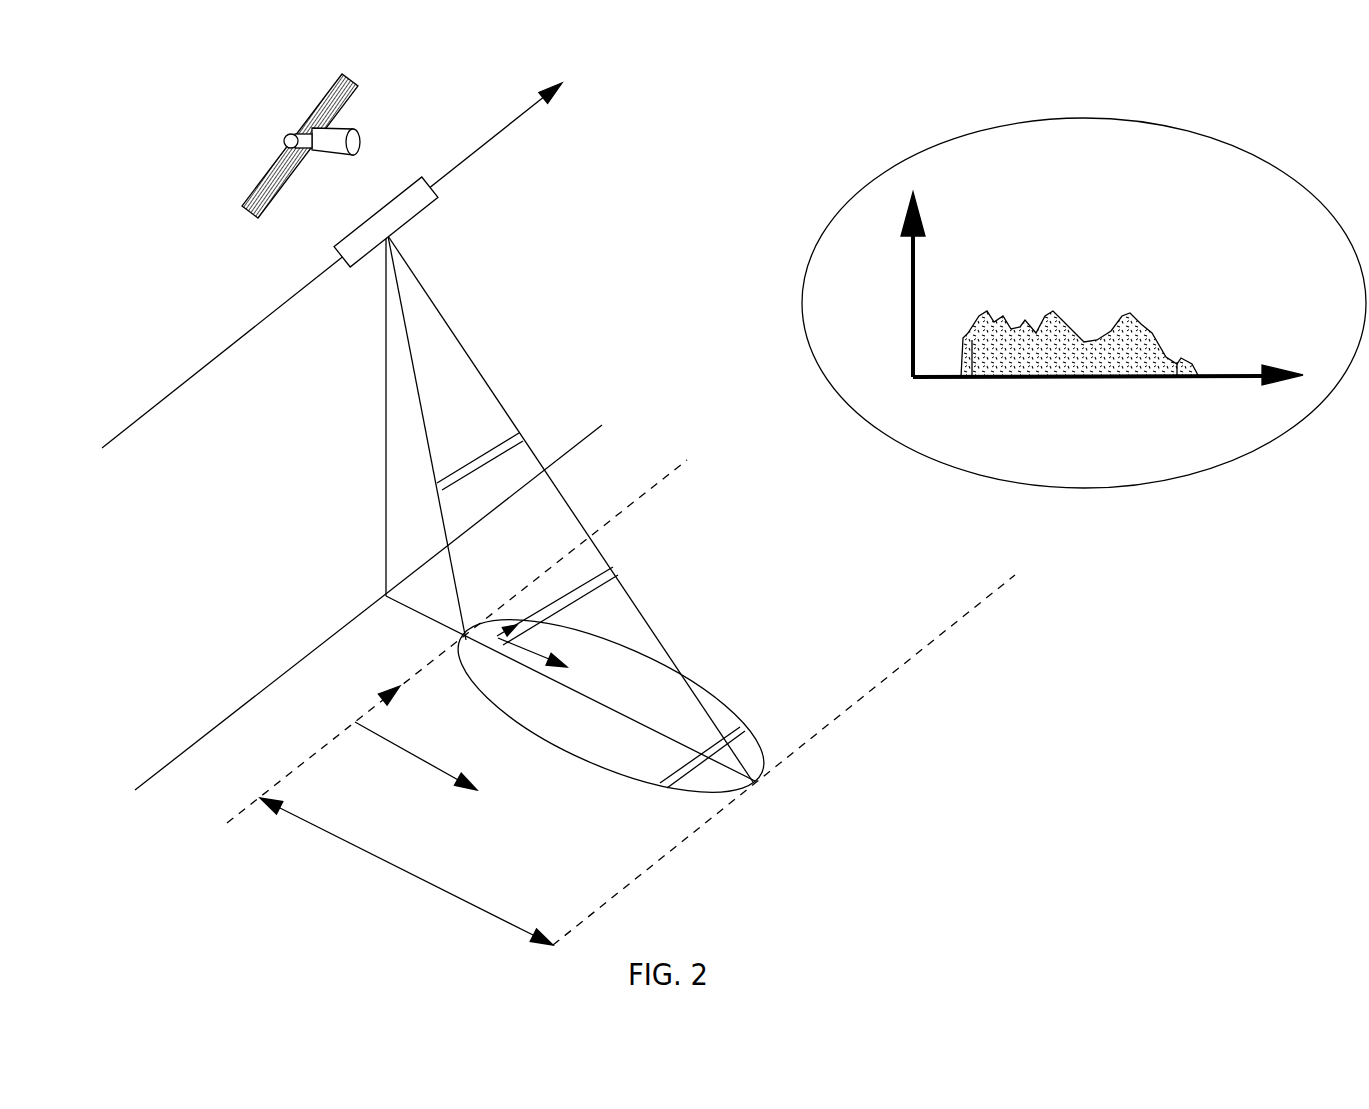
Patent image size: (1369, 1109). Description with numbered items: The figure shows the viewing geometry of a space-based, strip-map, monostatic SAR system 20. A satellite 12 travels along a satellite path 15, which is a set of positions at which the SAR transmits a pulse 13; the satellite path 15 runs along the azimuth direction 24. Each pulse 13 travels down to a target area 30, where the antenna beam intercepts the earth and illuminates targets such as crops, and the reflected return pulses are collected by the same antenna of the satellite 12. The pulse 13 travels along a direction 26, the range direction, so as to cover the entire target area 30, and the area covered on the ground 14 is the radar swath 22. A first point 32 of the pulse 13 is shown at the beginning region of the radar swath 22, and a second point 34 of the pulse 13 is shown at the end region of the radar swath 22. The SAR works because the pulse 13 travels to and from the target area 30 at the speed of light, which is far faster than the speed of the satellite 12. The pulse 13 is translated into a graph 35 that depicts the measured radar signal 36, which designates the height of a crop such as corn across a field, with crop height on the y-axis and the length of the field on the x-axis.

The satellite 12 is at (340, 107).
The pulse 13 is at (927, 367).
The ground 14 is at (594, 683).
The satellite path 15 is at (520, 118).
The SAR system 20 is at (705, 140).
The radar swath 22 is at (350, 845).
The azimuth direction 24 is at (385, 695).
The direction 26 is at (390, 742).
The target area 30 is at (705, 800).
The first point 32 is at (957, 380).
The second point 34 is at (1177, 388).
The graph 35 is at (1181, 126).
The measured radar signal 36 is at (1060, 316).